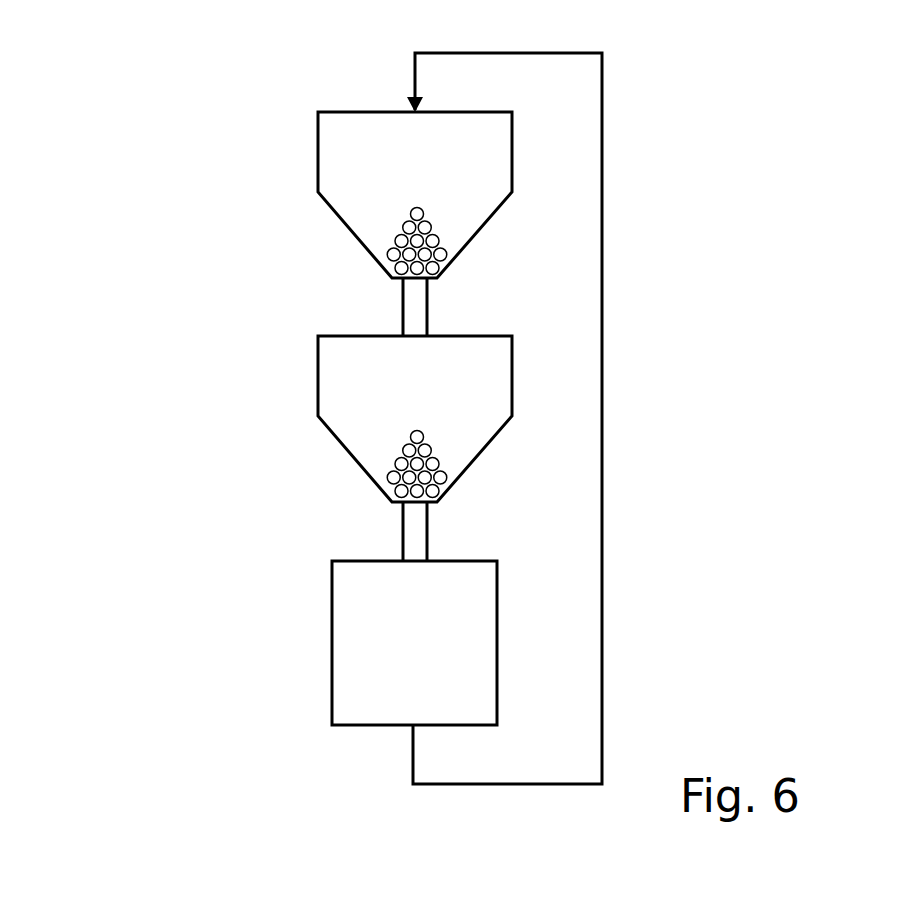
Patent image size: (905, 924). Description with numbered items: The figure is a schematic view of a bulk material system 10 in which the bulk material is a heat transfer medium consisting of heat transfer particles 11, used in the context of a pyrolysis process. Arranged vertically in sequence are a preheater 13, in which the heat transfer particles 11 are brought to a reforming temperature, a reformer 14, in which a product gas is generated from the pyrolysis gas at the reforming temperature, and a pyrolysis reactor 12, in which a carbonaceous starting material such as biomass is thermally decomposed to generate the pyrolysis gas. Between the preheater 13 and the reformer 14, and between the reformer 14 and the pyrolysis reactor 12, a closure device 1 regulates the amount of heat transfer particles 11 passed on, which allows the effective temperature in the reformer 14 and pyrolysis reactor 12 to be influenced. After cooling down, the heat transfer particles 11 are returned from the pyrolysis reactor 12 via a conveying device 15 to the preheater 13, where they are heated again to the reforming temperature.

The bulk material system 10 is at (109, 137).
The heat transfer particles 11 is at (406, 221).
The pyrolysis reactor 12 is at (331, 630).
The preheater 13 is at (317, 148).
The reformer 14 is at (317, 370).
The conveying device 15 is at (604, 459).
The closure device 1 is at (402, 294).